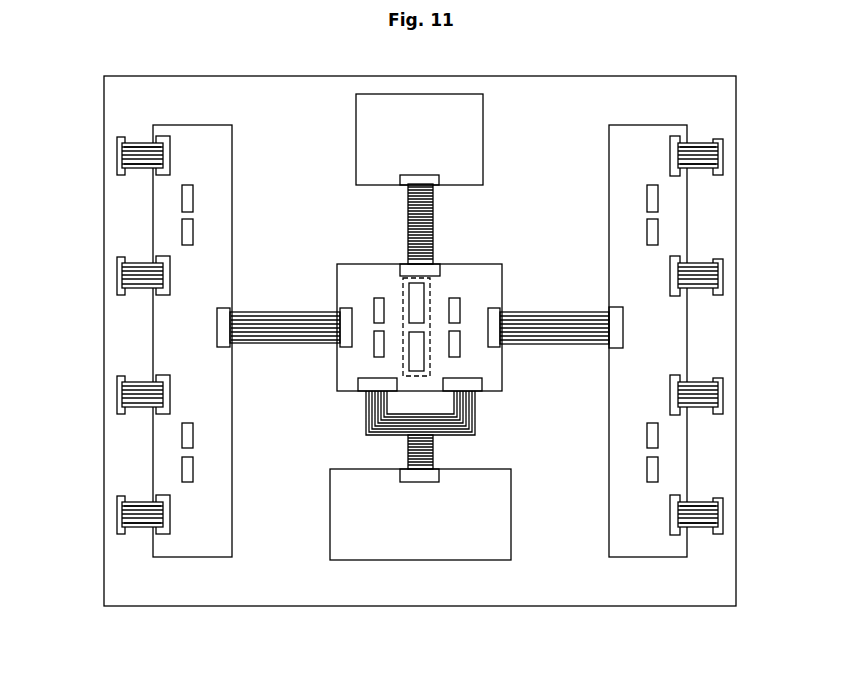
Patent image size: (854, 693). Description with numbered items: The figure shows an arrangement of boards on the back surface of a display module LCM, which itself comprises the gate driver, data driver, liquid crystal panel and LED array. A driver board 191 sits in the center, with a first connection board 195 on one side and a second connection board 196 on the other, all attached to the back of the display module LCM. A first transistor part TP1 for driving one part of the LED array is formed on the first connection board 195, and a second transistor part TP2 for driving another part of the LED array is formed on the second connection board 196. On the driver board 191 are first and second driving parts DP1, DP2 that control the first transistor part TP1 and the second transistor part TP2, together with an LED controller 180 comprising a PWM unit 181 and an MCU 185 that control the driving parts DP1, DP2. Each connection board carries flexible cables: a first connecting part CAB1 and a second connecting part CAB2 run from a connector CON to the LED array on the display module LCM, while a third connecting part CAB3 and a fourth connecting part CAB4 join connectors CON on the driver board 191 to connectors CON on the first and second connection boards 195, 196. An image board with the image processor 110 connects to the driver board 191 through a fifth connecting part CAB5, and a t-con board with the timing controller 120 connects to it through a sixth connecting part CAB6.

The display module LCM is at (421, 607).
The second connection board 196 is at (192, 557).
The first connection board 195 is at (650, 557).
The timing controller 120 is at (400, 145).
The image processor 110 is at (402, 533).
The driver board 191 is at (503, 283).
The connector CON is at (122, 155).
The first connecting part CAB1 is at (697, 146).
The second connecting part CAB2 is at (144, 146).
The third connecting part CAB3 is at (580, 320).
The fourth connecting part CAB4 is at (262, 320).
The fifth connecting part CAB5 is at (474, 419).
The sixth connecting part CAB6 is at (433, 222).
The first transistor part TP1 is at (657, 201).
The second transistor part TP2 is at (184, 201).
The first driving part DP1 is at (460, 341).
The second driving part DP2 is at (374, 341).
The LED controller 180 is at (403, 291).
The MCU 185 is at (415, 288).
The PWM unit 181 is at (418, 367).